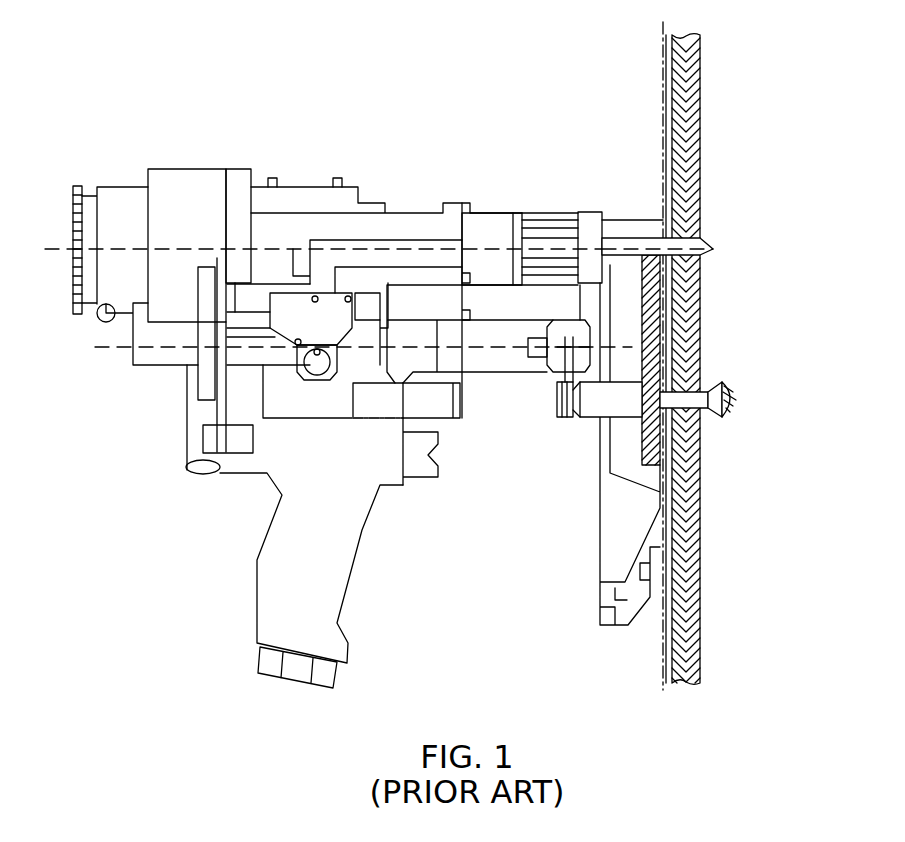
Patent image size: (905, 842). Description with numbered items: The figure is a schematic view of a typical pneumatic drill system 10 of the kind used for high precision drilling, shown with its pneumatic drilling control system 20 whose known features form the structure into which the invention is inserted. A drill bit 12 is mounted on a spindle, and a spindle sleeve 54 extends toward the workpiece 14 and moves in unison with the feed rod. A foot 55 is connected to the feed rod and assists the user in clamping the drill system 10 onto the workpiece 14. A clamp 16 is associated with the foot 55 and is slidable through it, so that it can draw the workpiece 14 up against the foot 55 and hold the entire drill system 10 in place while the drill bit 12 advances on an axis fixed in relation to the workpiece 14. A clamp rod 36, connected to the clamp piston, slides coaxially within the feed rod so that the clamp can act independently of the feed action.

The drill system 10 is at (147, 64).
The pneumatic drilling control system 20 is at (399, 218).
The spindle sleeve 54 is at (627, 228).
The workpiece 14 is at (692, 148).
The foot 55 is at (656, 300).
The clamp rod 36 is at (598, 412).
The drill bit 12 is at (716, 249).
The clamp 16 is at (748, 401).